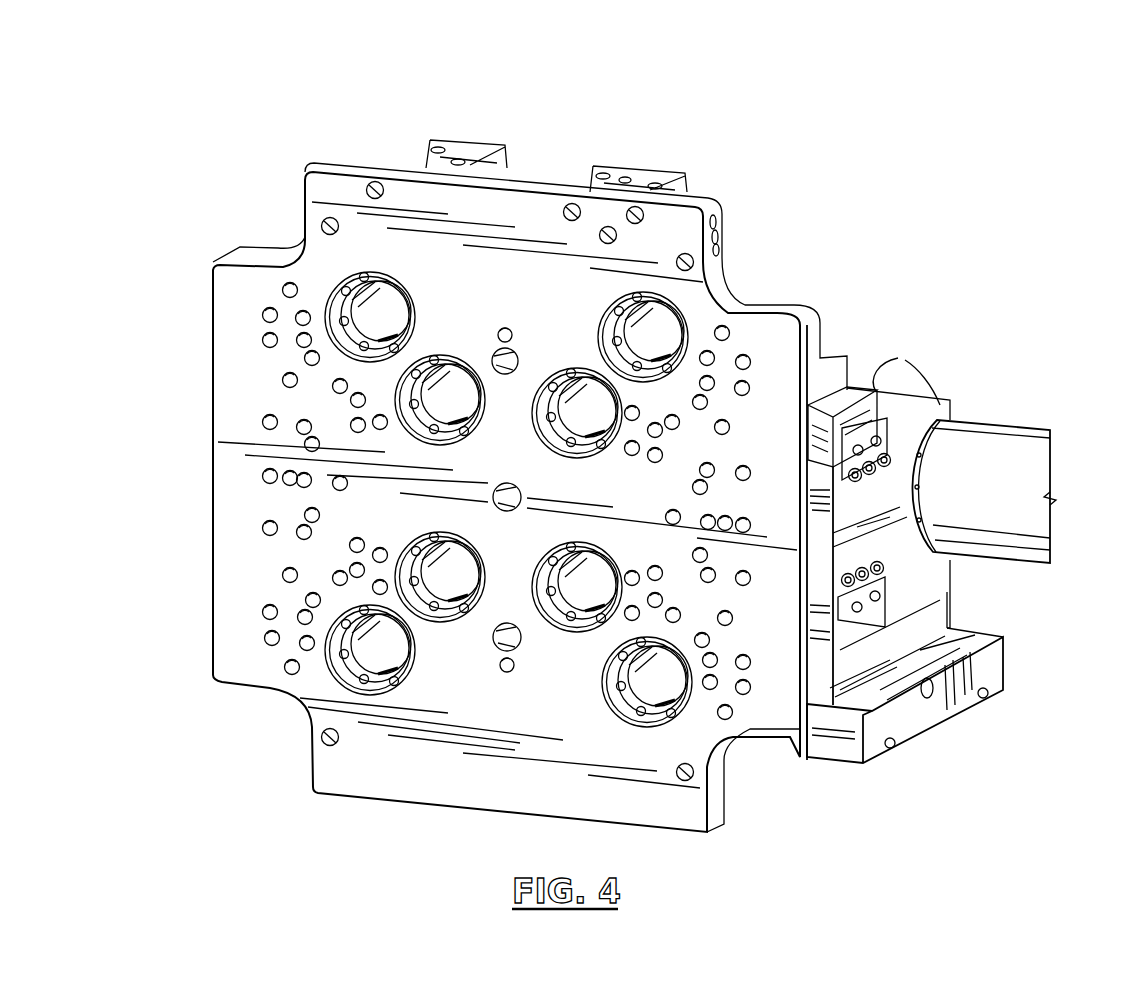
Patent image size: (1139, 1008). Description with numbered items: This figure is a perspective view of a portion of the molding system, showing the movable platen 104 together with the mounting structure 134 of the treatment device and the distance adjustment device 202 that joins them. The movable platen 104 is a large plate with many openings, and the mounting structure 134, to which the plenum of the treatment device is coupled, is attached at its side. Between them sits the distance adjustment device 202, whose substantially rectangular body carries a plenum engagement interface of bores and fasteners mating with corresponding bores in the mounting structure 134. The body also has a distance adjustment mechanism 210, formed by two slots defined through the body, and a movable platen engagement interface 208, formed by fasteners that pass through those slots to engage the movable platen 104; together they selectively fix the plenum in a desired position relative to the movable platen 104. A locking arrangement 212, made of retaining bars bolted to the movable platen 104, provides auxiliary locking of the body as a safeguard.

The movable platen 104 is at (470, 140).
The mounting structure 134 is at (1018, 437).
The distance adjustment device 202 is at (938, 413).
The movable platen engagement interface 208 is at (883, 578).
The distance adjustment mechanism 210 is at (917, 413).
The locking arrangement 212 is at (895, 413).